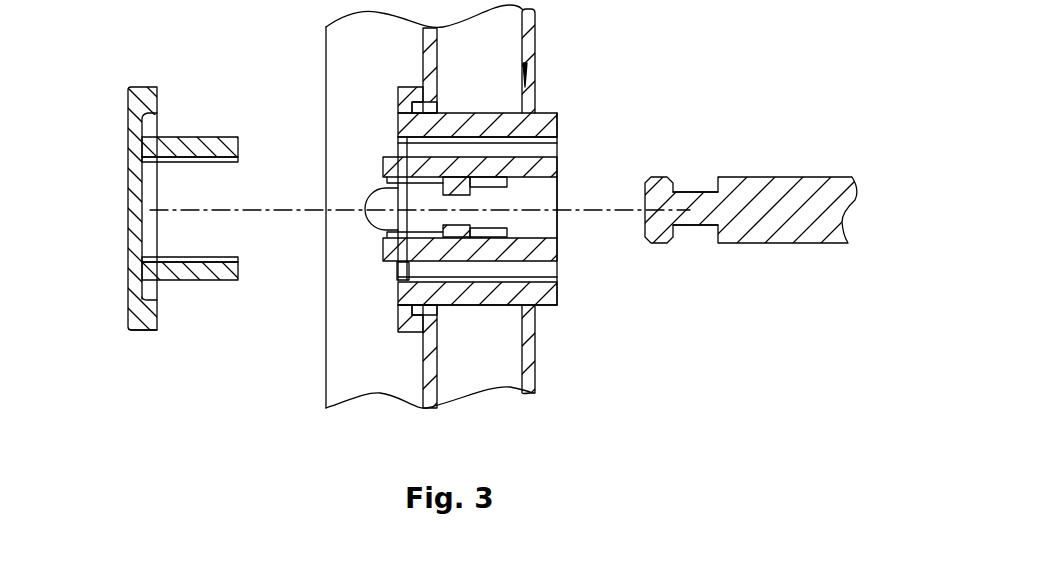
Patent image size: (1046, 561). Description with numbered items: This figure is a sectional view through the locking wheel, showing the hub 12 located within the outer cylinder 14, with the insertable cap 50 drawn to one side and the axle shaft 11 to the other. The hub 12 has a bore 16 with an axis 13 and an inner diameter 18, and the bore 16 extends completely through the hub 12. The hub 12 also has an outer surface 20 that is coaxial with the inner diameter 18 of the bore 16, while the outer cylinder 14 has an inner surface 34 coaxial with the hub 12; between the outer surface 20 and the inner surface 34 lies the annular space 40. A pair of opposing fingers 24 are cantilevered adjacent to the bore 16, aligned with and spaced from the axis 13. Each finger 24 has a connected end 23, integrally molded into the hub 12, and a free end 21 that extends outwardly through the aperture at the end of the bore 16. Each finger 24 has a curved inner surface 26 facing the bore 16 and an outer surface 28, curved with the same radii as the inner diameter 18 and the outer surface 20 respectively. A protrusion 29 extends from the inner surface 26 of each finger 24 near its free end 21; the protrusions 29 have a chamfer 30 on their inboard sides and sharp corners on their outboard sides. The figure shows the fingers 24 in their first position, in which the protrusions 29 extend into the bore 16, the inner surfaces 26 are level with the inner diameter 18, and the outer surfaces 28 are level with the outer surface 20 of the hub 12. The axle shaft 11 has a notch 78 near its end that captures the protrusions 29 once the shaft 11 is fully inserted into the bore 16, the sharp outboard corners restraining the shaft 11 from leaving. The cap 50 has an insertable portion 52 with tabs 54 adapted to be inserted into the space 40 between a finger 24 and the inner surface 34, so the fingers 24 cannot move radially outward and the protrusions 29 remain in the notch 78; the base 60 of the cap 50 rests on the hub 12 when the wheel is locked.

The axle shaft 11 is at (523, 280).
The hub 12 is at (523, 280).
The axis 13 is at (298, 207).
The outer cylinder 14 is at (558, 115).
The bore 16 is at (520, 200).
The inner diameter 18 is at (559, 180).
The outer surface 20 is at (490, 268).
The free end 21 is at (383, 170).
The connected end 23 is at (558, 292).
The finger 24 is at (560, 160).
The inner surface 26 is at (517, 179).
The outer surface 28 is at (491, 157).
The protrusion 29 is at (457, 183).
The chamfer 30 is at (470, 228).
The inner surface 34 is at (406, 272).
The annular space 40 is at (415, 150).
The insertable cap 50 is at (360, 280).
The insertable portion 52 is at (360, 280).
The tab 54 is at (195, 134).
The base 60 is at (165, 331).
The notch 78 is at (703, 226).